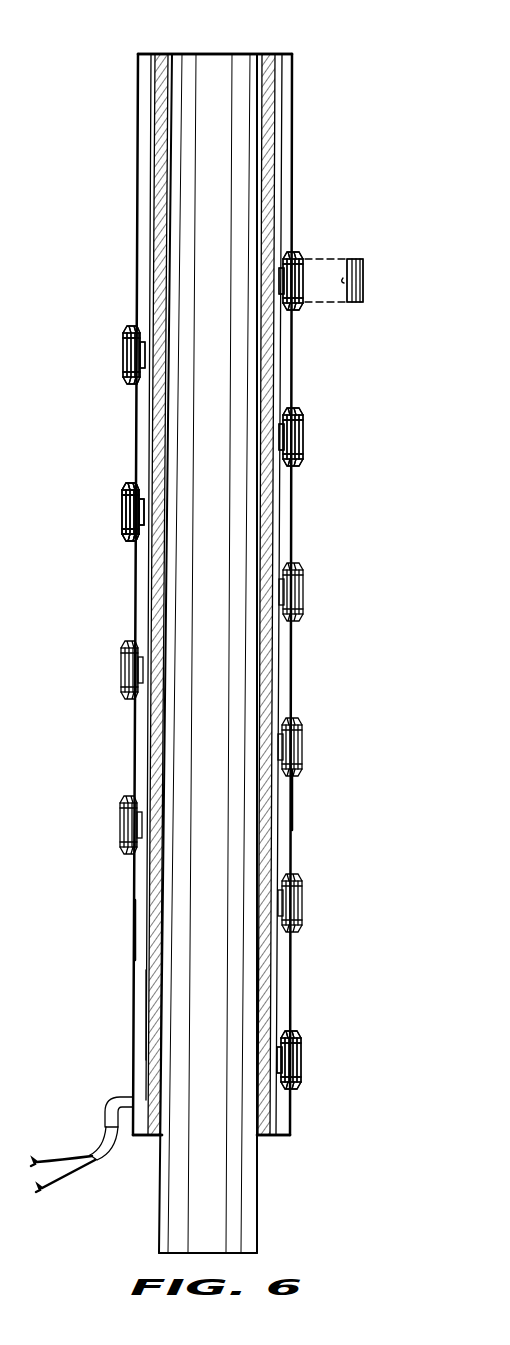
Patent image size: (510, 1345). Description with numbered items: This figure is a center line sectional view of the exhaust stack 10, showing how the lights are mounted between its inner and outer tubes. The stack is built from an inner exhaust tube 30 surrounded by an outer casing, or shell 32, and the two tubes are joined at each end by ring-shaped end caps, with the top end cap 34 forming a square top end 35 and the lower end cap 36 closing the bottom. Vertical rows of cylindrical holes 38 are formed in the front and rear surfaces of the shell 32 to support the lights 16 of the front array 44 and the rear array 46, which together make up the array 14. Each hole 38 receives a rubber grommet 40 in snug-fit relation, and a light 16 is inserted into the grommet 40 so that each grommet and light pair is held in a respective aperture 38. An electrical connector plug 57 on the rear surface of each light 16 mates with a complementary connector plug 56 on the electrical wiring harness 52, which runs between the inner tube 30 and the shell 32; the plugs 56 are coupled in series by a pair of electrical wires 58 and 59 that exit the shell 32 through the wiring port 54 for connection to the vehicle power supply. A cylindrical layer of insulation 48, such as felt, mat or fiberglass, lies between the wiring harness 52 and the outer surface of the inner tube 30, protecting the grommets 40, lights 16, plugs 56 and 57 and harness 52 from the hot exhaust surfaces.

The exhaust stack 10 is at (116, 95).
The array 14 is at (326, 192).
The light 16 is at (354, 304).
The inner exhaust tube 30 is at (260, 1226).
The outer casing 32 is at (136, 265).
The top end cap 34 is at (153, 56).
The square top end 35 is at (247, 48).
The end cap 36 is at (272, 1138).
The cylindrical hole 38 is at (293, 407).
The rubber grommet 40 is at (300, 258).
The front array 44 is at (306, 710).
The array 46 is at (114, 486).
The insulation 48 is at (294, 803).
The electrical wiring harness 52 is at (110, 1147).
The wiring port 54 is at (112, 1098).
The electrical connector plug 56 is at (136, 326).
The electrical connector plug 57 is at (338, 268).
The electrical wire 58 is at (138, 1000).
The electrical wire 59 is at (43, 1190).